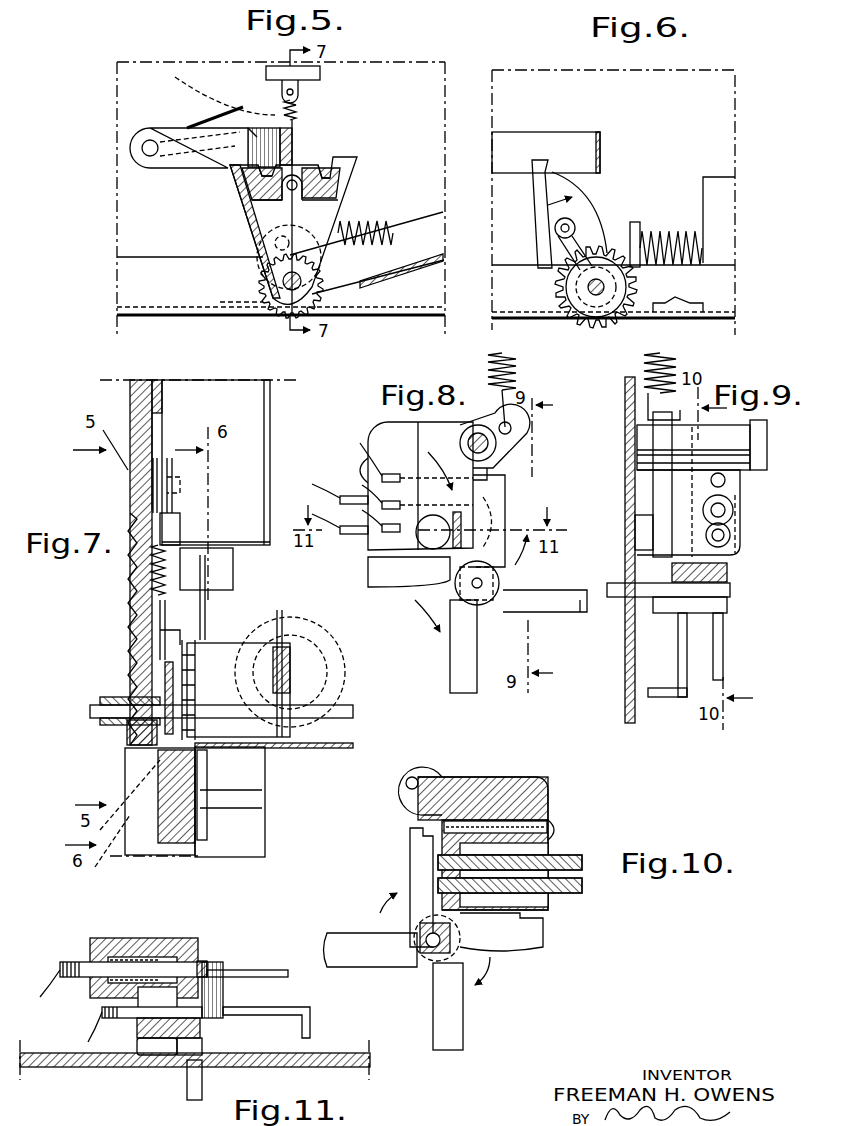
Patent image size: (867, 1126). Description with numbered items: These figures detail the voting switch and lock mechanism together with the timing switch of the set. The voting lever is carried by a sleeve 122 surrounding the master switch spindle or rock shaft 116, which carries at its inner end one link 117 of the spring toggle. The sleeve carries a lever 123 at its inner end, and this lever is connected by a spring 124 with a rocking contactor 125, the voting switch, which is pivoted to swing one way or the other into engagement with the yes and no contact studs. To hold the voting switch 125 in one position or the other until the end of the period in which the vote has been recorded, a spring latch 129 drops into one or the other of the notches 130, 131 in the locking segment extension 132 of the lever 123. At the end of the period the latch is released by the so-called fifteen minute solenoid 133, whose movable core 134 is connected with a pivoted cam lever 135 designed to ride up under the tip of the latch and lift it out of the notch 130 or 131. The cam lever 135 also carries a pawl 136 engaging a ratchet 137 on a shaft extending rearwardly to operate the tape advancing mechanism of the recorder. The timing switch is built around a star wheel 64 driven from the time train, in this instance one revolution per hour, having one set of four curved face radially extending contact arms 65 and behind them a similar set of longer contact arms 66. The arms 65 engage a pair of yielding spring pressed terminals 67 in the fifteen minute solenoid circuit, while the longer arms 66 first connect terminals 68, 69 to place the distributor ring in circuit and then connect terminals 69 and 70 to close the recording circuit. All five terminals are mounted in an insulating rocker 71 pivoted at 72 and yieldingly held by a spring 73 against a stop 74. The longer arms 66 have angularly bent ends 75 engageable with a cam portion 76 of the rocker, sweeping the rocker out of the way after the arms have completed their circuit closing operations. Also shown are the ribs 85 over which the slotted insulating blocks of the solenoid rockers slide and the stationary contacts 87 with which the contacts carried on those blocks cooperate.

In FIG. 10, the star wheel 64 is at (488, 963).
In FIG. 8, the contact arms 65 is at (545, 582).
In FIG. 9, the contact arms 65 is at (715, 658).
In FIG. 10, the contact arms 65 is at (415, 846).
In FIG. 11, the contact arms 65 is at (255, 970).
In FIG. 8, the longer contact arms 66 is at (498, 492).
In FIG. 9, the longer contact arms 66 is at (678, 640).
In FIG. 10, the longer contact arms 66 is at (545, 925).
In FIG. 11, the longer contact arms 66 is at (312, 1012).
In FIG. 9, the yielding spring pressed terminals 67 is at (722, 535).
In FIG. 10, the yielding spring pressed terminals 67 is at (437, 887).
In FIG. 11, the yielding spring pressed terminals 67 is at (203, 965).
In FIG. 9, the terminal 68 is at (711, 486).
In FIG. 9, the terminal 69 is at (727, 562).
In FIG. 11, the terminal 69 is at (205, 1002).
In FIG. 9, the terminal 70 is at (700, 435).
In FIG. 9, the insulating rocker 71 is at (740, 540).
In FIG. 8, the pivot 72 is at (460, 443).
In FIG. 8, the spring 73 is at (517, 358).
In FIG. 9, the spring 73 is at (672, 355).
In FIG. 8, the stop 74 is at (462, 517).
In FIG. 9, the stop 74 is at (640, 535).
In FIG. 11, the stop 74 is at (202, 1050).
In FIG. 9, the angularly bent ends 75 is at (660, 697).
In FIG. 9, the cam portion 76 is at (658, 502).
In FIG. 7, the ribs 85 is at (255, 800).
In FIG. 7, the stationary contacts 87 is at (207, 773).
In FIG. 5, the rock shaft 116 is at (272, 283).
In FIG. 7, the rock shaft 116 is at (100, 719).
In FIG. 5, the link 117 is at (385, 275).
In FIG. 7, the link 117 is at (165, 672).
In FIG. 7, the sleeve 122 is at (110, 697).
In FIG. 7, the lever 123 is at (160, 616).
In FIG. 7, the spring 124 is at (166, 580).
In FIG. 5, the rocking contactor 125 is at (320, 75).
In FIG. 7, the rocking contactor 125 is at (170, 520).
In FIG. 5, the spring latch 129 is at (175, 170).
In FIG. 6, the spring latch 129 is at (543, 137).
In FIG. 5, the notch 130 is at (265, 172).
In FIG. 5, the notch 131 is at (330, 176).
In FIG. 7, the locking segment extension 132 is at (206, 614).
In FIG. 6, the fifteen minute solenoid 133 is at (735, 199).
In FIG. 5, the movable core 134 is at (356, 221).
In FIG. 6, the movable core 134 is at (662, 230).
In FIG. 6, the cam lever 135 is at (582, 200).
In FIG. 6, the pawl 136 is at (578, 222).
In FIG. 7, the pawl 136 is at (200, 650).
In FIG. 5, the ratchet 137 is at (283, 320).
In FIG. 6, the ratchet 137 is at (592, 322).
In FIG. 7, the ratchet 137 is at (272, 672).